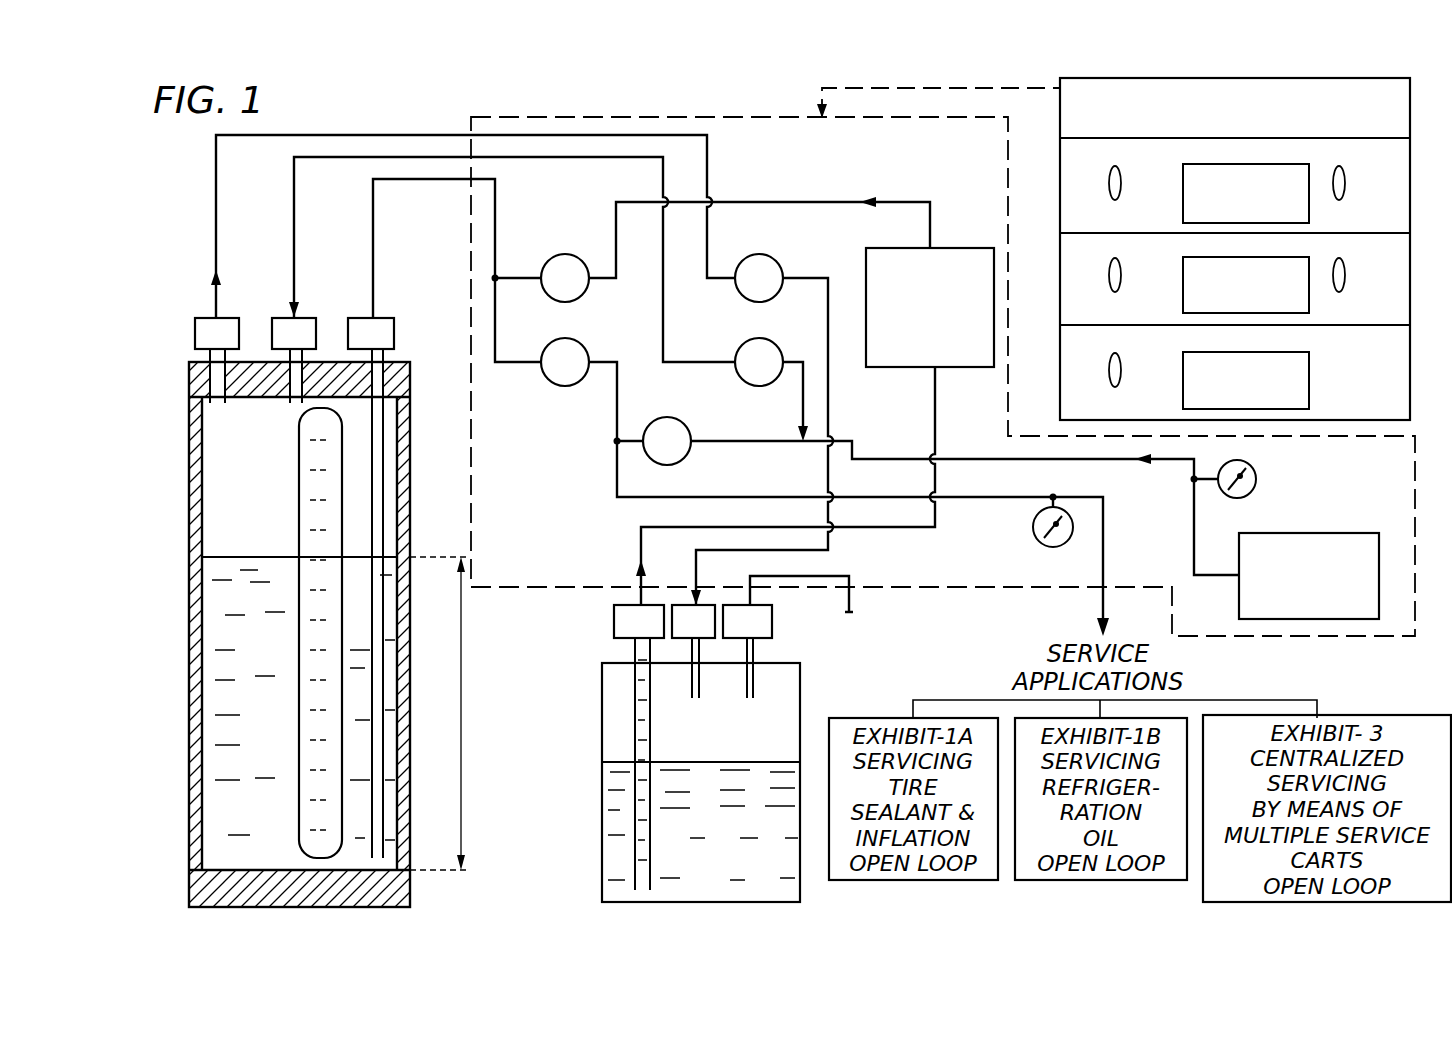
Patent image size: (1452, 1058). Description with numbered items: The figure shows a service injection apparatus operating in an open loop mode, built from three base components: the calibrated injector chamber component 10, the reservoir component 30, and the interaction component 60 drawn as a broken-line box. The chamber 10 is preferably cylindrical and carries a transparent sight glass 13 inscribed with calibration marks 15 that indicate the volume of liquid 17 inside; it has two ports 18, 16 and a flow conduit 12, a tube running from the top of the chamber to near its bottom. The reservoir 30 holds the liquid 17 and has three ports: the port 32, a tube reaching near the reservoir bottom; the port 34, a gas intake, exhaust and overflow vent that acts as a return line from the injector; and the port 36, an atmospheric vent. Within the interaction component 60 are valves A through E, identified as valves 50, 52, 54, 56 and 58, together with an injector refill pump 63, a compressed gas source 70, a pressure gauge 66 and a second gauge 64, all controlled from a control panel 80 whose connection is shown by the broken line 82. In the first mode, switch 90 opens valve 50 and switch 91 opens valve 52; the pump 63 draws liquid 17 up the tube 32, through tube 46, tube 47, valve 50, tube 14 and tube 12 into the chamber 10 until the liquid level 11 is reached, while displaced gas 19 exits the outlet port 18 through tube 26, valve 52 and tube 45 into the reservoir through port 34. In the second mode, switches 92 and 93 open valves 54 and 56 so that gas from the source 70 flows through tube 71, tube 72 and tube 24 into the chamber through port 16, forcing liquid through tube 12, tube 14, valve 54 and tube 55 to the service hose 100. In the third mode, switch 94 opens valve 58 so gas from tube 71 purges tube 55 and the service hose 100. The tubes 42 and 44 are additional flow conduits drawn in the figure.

The calibrated injector chamber component 10 is at (195, 632).
The liquid level 11 is at (461, 688).
The flow conduit 12 is at (383, 768).
The sight glass 13 is at (300, 556).
The tube 14 is at (373, 232).
The calibration marks 15 is at (310, 525).
The port 16 is at (295, 400).
The liquid 17 is at (222, 742).
The outlet port 18 is at (212, 405).
The gas 19 is at (215, 482).
The tube 24 is at (294, 232).
The tube 26 is at (216, 232).
The reservoir component 30 is at (602, 786).
The port 32 is at (640, 872).
The port 34 is at (695, 700).
The port 36 is at (750, 700).
The return line 42 is at (707, 550).
The vent line 44 is at (852, 606).
The tube 45 is at (828, 393).
The tube 46 is at (890, 527).
The tube 47 is at (800, 202).
The valve A 50 is at (565, 254).
The valve B 52 is at (775, 262).
The valve C 54 is at (564, 386).
The service line 55 is at (715, 497).
The valve D 56 is at (742, 348).
The valve E 58 is at (665, 417).
The interaction component 60 is at (471, 432).
The injector refill pump 63 is at (886, 248).
The pressure gauge 64 is at (1033, 530).
The pressure gauge 66 is at (1257, 477).
The compressed gas source 70 is at (1308, 533).
The tube 71 is at (876, 459).
The tube 72 is at (803, 410).
The control panel 80 is at (1060, 116).
The broken line 82 is at (937, 92).
The switch 90 is at (1108, 183).
The switch 91 is at (1346, 185).
The switch 92 is at (1108, 275).
The switch 93 is at (1346, 277).
The switch 94 is at (1108, 370).
The service hose 100 is at (1100, 596).